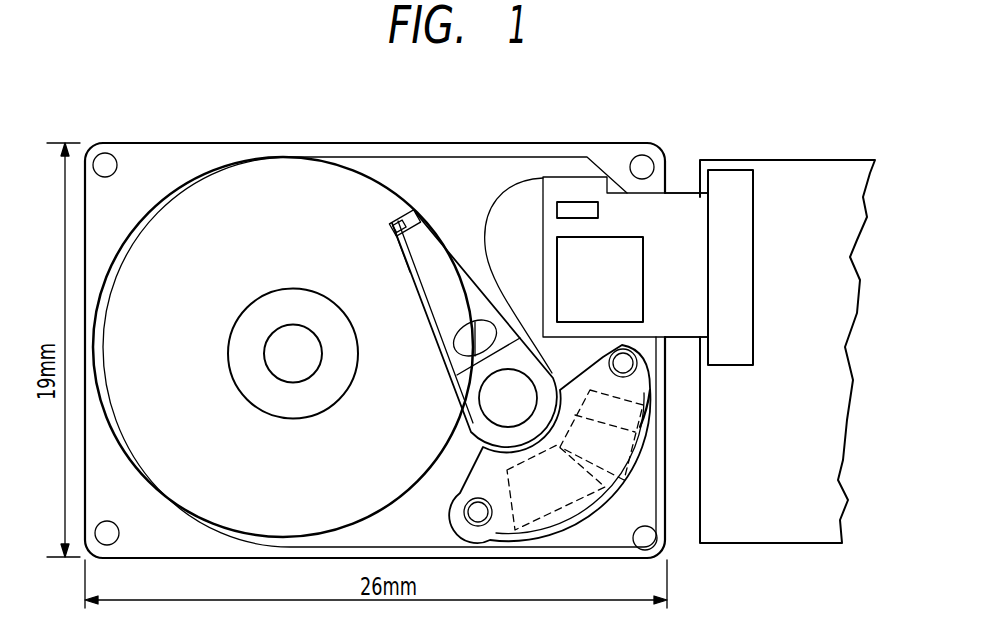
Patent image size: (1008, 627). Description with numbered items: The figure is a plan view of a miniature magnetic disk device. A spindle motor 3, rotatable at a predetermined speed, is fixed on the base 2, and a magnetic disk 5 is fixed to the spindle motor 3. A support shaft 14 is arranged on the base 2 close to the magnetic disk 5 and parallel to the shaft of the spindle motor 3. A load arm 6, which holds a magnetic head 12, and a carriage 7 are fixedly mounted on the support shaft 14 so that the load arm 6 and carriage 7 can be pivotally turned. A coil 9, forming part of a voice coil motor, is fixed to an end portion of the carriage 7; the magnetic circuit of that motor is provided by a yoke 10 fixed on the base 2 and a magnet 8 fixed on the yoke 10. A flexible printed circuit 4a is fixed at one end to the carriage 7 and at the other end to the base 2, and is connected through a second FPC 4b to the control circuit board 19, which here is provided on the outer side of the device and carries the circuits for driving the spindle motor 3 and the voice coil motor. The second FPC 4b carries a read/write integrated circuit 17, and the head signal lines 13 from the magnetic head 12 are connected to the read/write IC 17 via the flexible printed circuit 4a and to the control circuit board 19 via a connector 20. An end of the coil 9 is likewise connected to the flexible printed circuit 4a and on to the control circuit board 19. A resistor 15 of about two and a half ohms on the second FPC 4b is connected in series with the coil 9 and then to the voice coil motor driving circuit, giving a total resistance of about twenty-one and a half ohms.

The base 2 is at (146, 158).
The spindle motor 3 is at (247, 293).
The magnetic disk 5 is at (272, 185).
The load arm 6 is at (456, 276).
The carriage 7 is at (520, 357).
The magnetic head 12 is at (391, 222).
The head signal lines 13 is at (408, 267).
The support shaft 14 is at (503, 413).
The coil 9 is at (565, 518).
The magnet 8 is at (634, 425).
The yoke 10 is at (640, 427).
The flexible printed circuit 4a is at (505, 188).
The second FPC 4b is at (680, 208).
The resistor 15 is at (572, 200).
The read/write integrated circuit 17 is at (610, 253).
The control circuit board 19 is at (783, 173).
The connector 20 is at (733, 185).